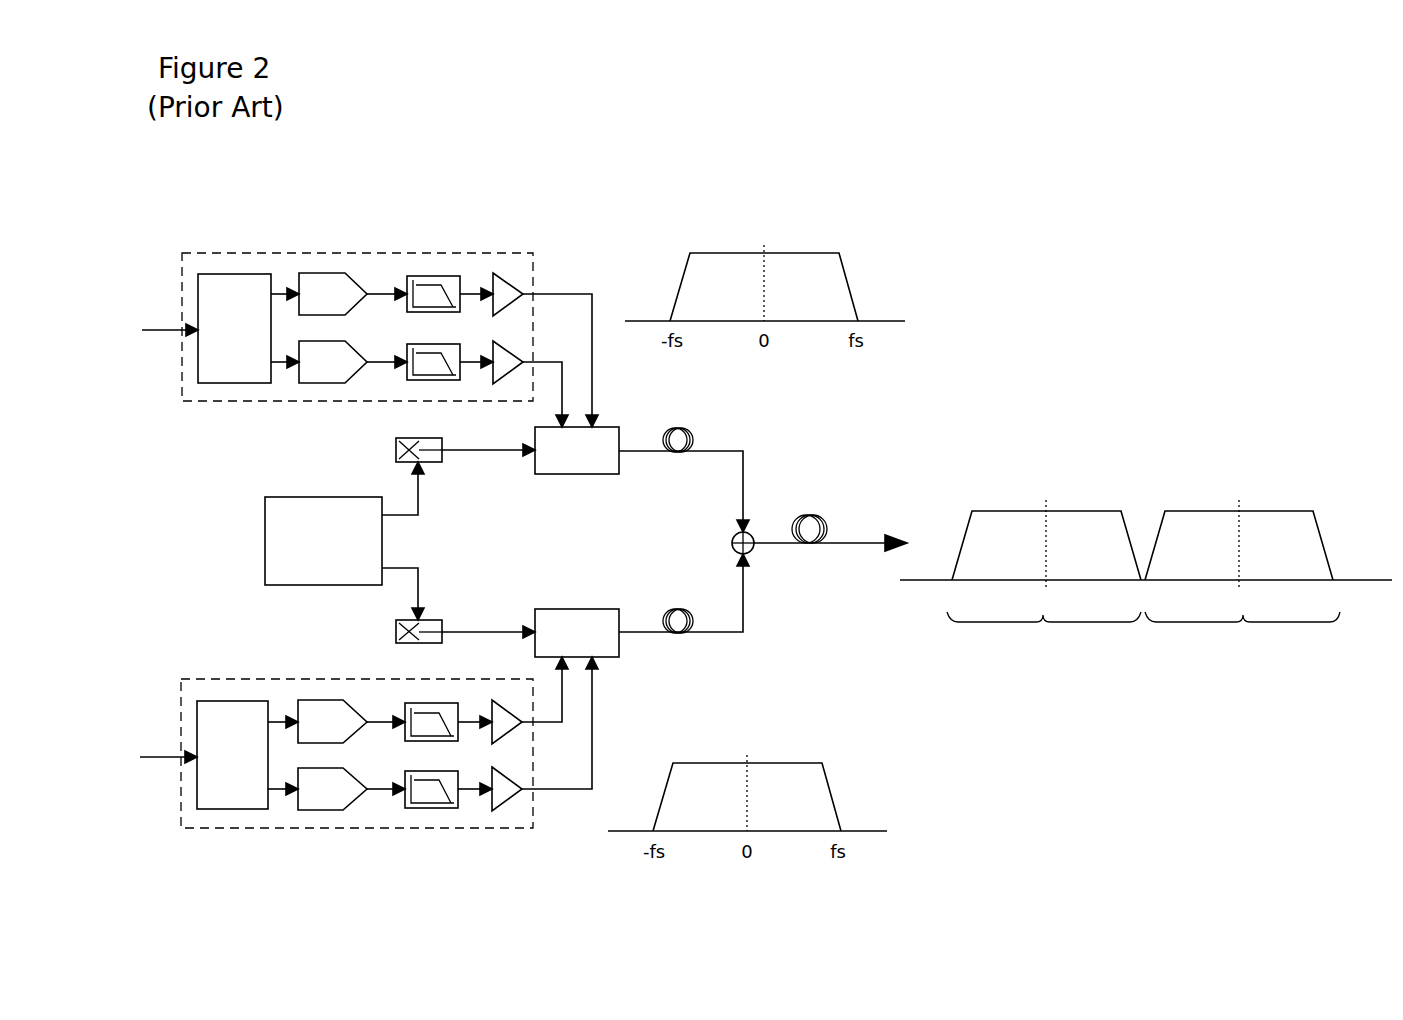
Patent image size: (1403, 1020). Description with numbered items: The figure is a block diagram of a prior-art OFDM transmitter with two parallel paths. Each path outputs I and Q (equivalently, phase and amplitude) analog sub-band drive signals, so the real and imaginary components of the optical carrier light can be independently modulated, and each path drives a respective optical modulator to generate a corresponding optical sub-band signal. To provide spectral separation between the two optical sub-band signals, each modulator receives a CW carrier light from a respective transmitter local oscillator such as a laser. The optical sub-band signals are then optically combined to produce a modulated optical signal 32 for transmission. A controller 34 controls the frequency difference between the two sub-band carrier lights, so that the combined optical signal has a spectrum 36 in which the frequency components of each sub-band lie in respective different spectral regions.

The modulated optical signal 32 is at (862, 541).
The controller 34 is at (265, 518).
The spectrum 36 is at (1177, 476).